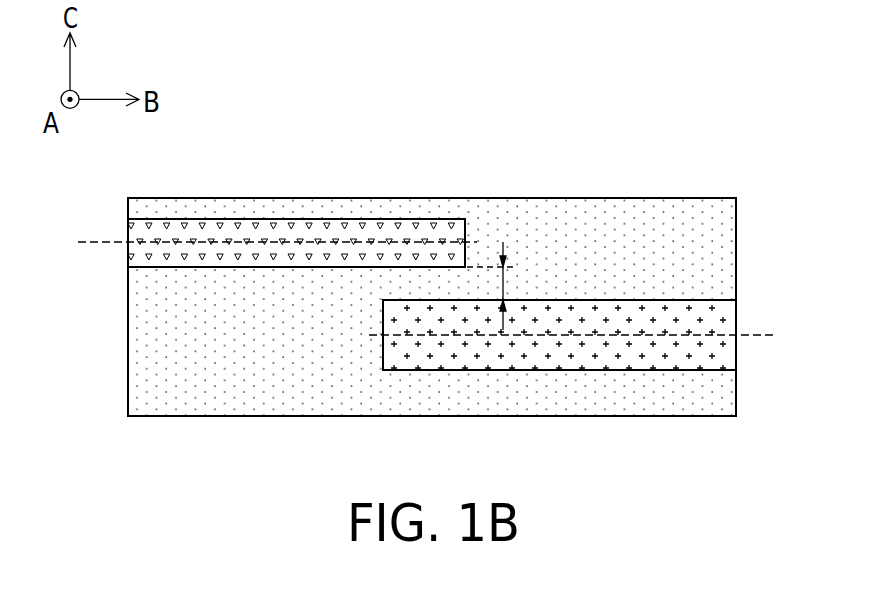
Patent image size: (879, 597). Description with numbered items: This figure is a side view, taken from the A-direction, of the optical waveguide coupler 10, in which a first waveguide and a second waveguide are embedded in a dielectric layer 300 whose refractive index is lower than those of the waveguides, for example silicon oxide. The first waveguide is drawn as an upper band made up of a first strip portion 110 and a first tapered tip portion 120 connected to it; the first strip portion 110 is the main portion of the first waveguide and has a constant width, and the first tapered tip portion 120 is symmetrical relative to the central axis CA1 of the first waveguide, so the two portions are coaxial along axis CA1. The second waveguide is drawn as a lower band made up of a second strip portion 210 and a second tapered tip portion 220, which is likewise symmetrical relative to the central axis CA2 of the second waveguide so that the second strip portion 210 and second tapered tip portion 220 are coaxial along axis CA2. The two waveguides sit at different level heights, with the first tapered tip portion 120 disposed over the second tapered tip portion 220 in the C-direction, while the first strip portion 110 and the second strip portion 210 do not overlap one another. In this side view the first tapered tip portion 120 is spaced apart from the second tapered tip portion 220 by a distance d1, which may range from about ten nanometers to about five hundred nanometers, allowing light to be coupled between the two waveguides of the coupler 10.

The optical waveguide coupler 10 is at (432, 278).
The first strip portion 110 is at (243, 219).
The first tapered tip portion 120 is at (465, 219).
The second strip portion 210 is at (628, 370).
The second tapered tip portion 220 is at (628, 425).
The dielectric layer 300 is at (730, 251).
The distance d1 is at (500, 286).
The central axis of the first waveguide CA1 is at (83, 240).
The central axis of the second waveguide CA2 is at (768, 337).